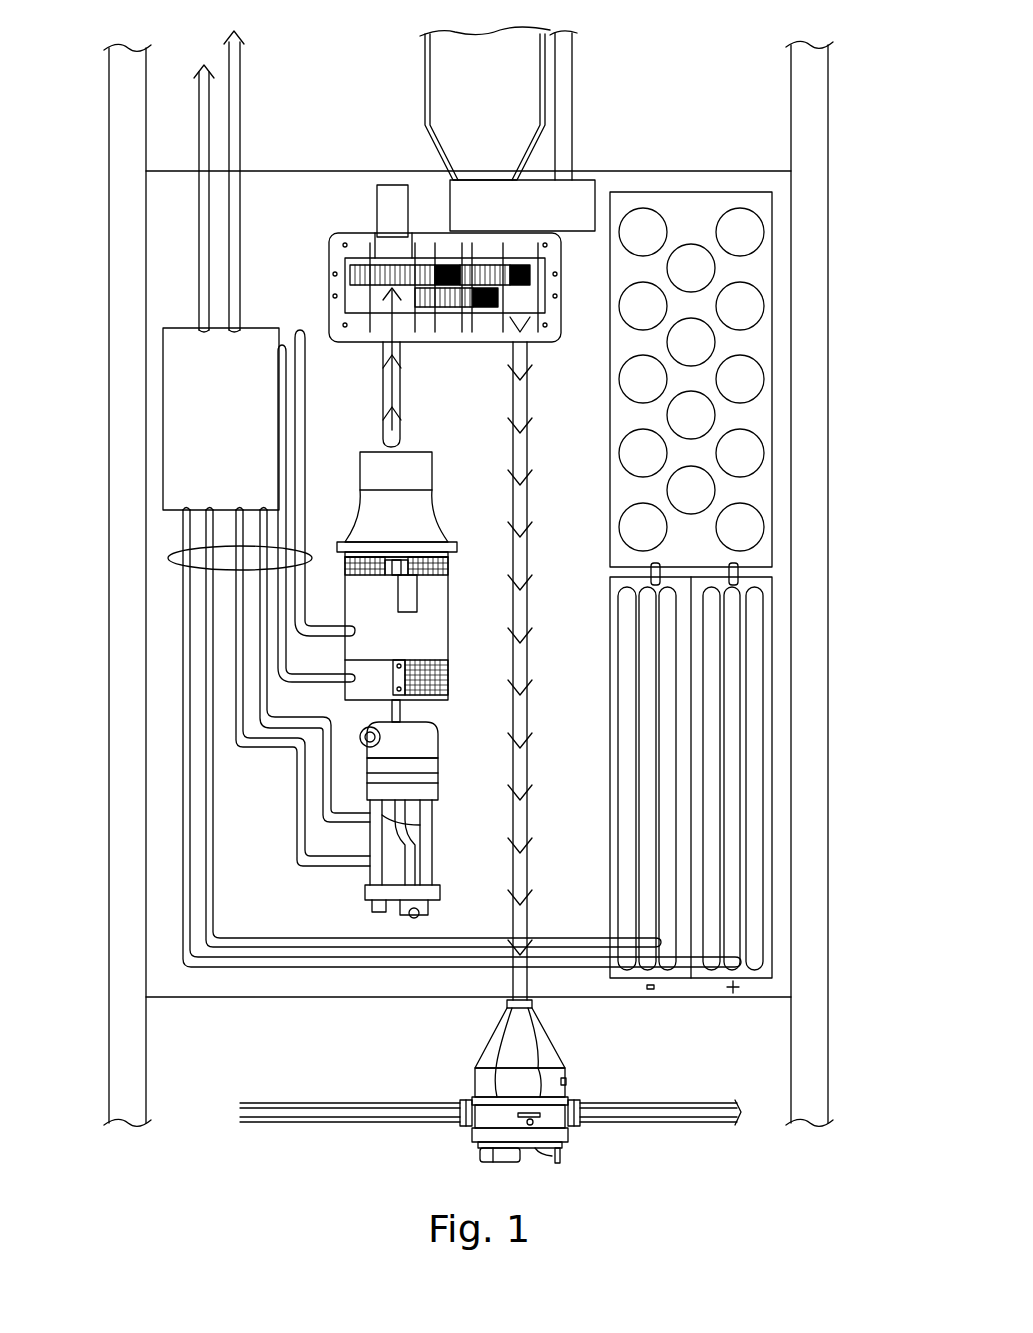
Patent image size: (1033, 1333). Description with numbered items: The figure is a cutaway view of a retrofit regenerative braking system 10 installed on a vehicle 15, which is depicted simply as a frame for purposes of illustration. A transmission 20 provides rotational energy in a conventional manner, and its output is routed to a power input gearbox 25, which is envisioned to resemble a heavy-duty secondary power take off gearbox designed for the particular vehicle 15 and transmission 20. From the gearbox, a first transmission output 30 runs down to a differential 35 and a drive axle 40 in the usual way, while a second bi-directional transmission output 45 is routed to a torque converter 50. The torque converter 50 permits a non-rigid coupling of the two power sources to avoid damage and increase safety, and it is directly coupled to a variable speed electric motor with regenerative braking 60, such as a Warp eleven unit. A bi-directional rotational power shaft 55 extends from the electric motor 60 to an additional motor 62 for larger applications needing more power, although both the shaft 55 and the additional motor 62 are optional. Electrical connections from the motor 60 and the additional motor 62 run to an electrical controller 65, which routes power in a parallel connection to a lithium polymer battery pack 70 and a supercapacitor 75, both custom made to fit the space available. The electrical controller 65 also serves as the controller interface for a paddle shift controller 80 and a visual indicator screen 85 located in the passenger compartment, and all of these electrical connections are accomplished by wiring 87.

The retrofit regenerative braking system 10 is at (866, 1074).
The vehicle 15 is at (122, 208).
The transmission 20 is at (500, 103).
The power input gearbox 25 is at (510, 297).
The first transmission output 30 is at (513, 866).
The differential 35 is at (445, 1114).
The drive axle 40 is at (250, 1100).
The second bi-directional transmission output 45 is at (383, 382).
The torque converter 50 is at (382, 517).
The bi-directional rotational power shaft 55 is at (397, 711).
The variable speed electric motor with regenerative braking 60 is at (385, 643).
The additional motor 62 is at (378, 821).
The electrical controller 65 is at (193, 438).
The lithium polymer battery pack 70 is at (713, 712).
The supercapacitor 75 is at (735, 350).
The paddle shift controller 80 is at (205, 90).
The visual indicator screen 85 is at (232, 55).
The wiring 87 is at (170, 558).